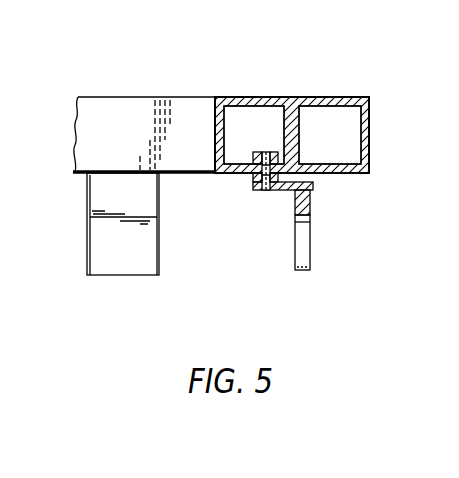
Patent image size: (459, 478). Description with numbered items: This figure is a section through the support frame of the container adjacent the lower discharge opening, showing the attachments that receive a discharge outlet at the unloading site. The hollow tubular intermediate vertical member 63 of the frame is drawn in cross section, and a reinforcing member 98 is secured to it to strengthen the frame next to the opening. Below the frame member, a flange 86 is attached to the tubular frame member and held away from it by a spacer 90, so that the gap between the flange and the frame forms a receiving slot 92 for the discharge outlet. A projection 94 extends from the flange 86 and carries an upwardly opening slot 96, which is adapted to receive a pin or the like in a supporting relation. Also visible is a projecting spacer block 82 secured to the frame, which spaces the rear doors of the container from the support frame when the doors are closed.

The intermediate vertical member 63 is at (259, 100).
The reinforcing member 98 is at (338, 100).
The receiving slot 92 is at (305, 183).
The projection 94 is at (306, 210).
The upwardly opening slot 96 is at (302, 256).
The flange 86 is at (280, 192).
The spacer 90 is at (253, 178).
The spacer block 82 is at (100, 245).